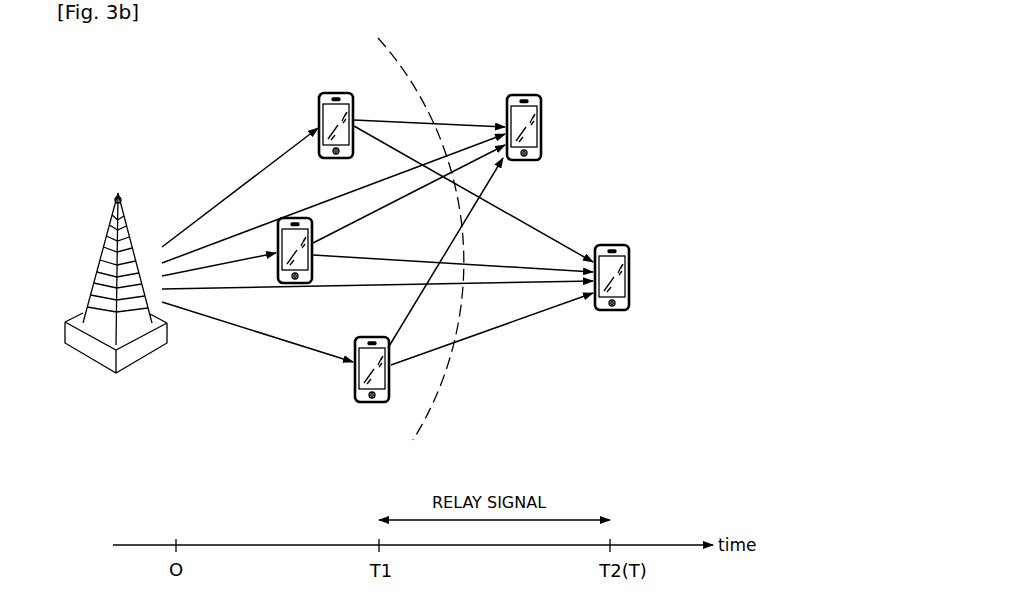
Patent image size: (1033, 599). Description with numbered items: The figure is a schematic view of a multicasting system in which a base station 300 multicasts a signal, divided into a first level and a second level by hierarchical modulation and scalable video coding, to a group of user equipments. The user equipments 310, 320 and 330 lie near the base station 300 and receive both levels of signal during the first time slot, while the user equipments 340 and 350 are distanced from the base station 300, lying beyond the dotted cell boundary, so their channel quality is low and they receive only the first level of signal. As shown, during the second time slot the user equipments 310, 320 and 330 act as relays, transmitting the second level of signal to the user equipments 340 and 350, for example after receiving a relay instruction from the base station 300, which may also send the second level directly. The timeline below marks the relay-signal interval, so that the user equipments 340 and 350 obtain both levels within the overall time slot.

The base station 300 is at (115, 195).
The user equipment 310 is at (333, 93).
The user equipment 320 is at (278, 271).
The user equipment 330 is at (372, 403).
The user equipment 340 is at (542, 128).
The user equipment 350 is at (630, 277).